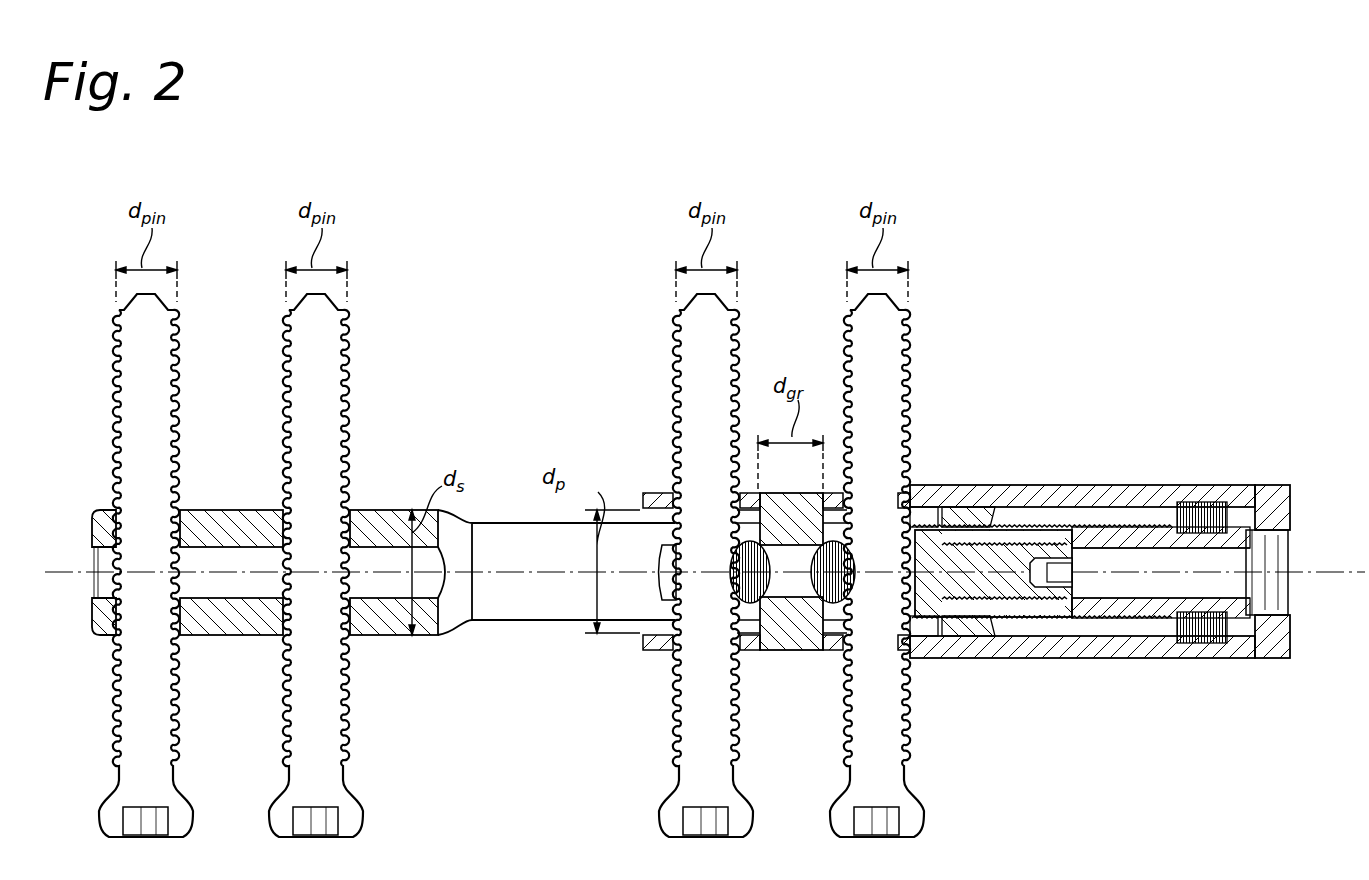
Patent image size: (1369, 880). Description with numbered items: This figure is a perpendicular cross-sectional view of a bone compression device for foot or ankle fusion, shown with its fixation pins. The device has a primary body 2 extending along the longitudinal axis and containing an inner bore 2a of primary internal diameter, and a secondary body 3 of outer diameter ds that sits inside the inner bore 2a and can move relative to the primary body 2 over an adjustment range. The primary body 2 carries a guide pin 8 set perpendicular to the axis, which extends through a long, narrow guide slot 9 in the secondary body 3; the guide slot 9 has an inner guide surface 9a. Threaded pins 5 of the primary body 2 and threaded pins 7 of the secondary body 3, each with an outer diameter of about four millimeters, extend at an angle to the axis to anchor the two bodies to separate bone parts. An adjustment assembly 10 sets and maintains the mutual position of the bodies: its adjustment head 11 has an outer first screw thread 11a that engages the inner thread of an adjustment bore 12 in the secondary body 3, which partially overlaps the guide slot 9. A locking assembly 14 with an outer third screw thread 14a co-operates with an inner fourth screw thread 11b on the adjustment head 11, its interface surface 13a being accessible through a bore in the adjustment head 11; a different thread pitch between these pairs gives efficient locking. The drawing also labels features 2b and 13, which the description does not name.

The primary body 2 is at (1136, 567).
The inner bore 2a is at (660, 517).
The threaded bore 2b is at (1193, 508).
The secondary body 3 is at (378, 522).
The pins 5 is at (870, 377).
The pins 7 is at (160, 397).
The guide pin 8 is at (793, 637).
The guide slot 9 is at (557, 555).
The inner guide surface 9a is at (520, 602).
The adjustment assembly 10 is at (1270, 503).
The adjustment head 11 is at (1081, 568).
The first screw thread 11a is at (938, 525).
The fourth screw thread 11b is at (1068, 525).
The adjustment bore 12 is at (925, 520).
The screw 13 is at (1196, 626).
The interface surface 13a is at (1068, 578).
The locking assembly 14 is at (1002, 635).
The third screw thread 14a is at (980, 603).